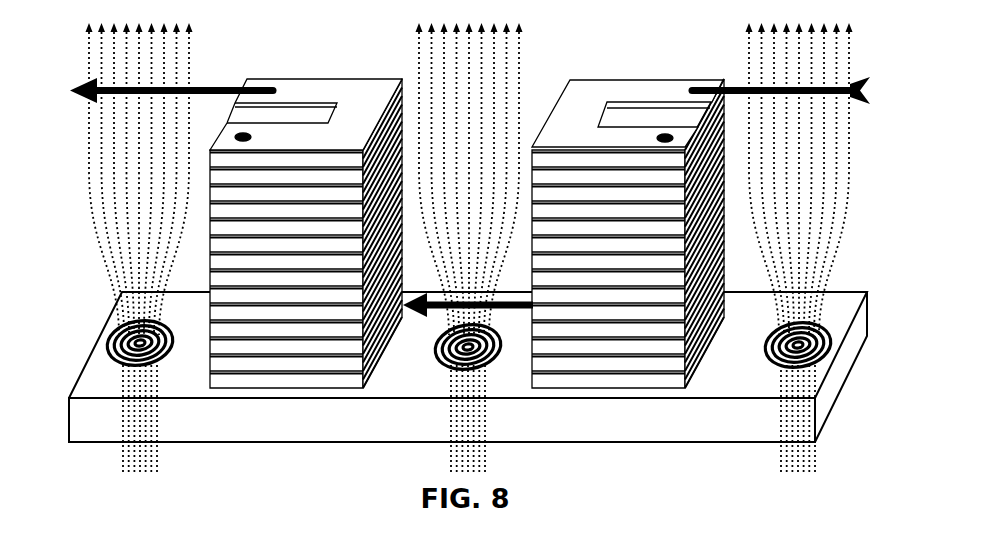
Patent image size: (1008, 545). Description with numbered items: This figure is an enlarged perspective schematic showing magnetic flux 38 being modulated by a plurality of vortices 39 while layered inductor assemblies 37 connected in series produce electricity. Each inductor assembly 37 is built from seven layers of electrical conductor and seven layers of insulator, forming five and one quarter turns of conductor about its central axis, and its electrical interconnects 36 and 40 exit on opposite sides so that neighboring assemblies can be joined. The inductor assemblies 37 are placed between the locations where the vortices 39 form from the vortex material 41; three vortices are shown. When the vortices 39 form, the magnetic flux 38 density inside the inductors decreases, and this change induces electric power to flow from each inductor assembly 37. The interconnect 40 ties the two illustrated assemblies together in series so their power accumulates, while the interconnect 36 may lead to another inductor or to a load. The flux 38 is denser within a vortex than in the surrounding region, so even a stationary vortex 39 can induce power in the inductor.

The interconnect 36 is at (211, 84).
The inductor assembly 37 is at (360, 96).
The magnetic flux 38 is at (518, 95).
The vortices 39 is at (166, 352).
The interconnect 40 is at (413, 312).
The vortex material 41 is at (545, 425).